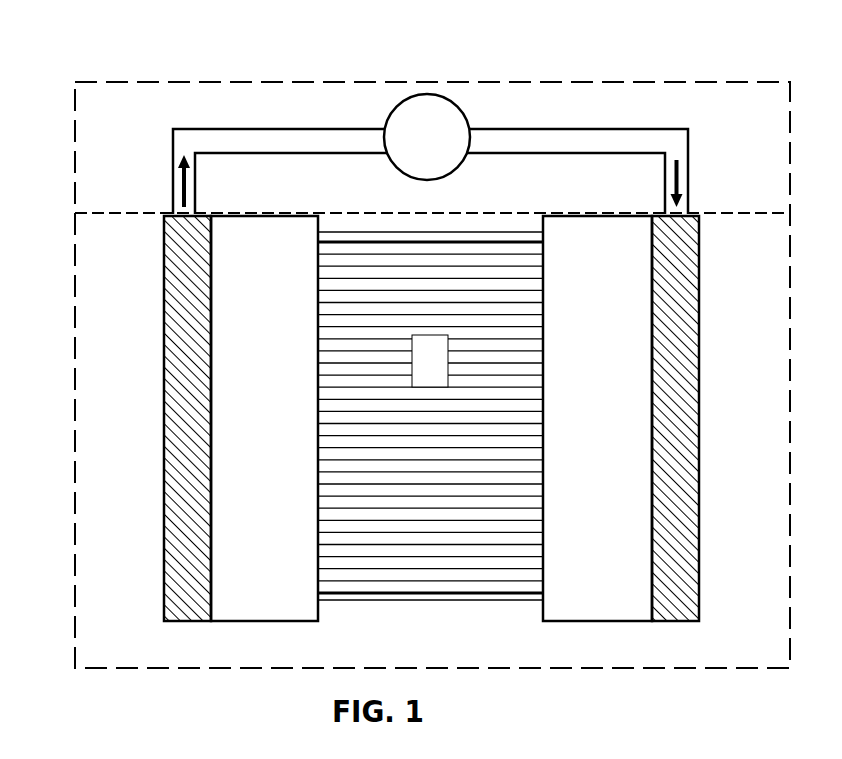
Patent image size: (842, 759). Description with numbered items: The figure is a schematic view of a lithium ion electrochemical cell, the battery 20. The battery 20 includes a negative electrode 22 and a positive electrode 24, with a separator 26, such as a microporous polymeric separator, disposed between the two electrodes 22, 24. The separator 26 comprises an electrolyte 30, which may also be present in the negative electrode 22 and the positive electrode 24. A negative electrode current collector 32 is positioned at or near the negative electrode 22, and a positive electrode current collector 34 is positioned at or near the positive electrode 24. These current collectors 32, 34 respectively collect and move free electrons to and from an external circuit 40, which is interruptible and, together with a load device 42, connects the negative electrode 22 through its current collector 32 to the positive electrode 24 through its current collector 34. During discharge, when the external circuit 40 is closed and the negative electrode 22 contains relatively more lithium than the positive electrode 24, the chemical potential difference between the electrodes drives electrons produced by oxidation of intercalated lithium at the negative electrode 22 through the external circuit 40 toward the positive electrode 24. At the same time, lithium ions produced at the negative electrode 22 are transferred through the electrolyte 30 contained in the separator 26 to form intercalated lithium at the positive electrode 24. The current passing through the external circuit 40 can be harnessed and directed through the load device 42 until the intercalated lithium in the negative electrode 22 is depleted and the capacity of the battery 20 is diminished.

The battery 20 is at (50, 318).
The negative electrode 22 is at (256, 370).
The positive electrode 24 is at (583, 370).
The separator 26 is at (437, 602).
The electrolyte 30 is at (417, 373).
The negative electrode current collector 32 is at (163, 307).
The positive electrode current collector 34 is at (699, 298).
The external circuit 40 is at (133, 78).
The load device 42 is at (414, 150).